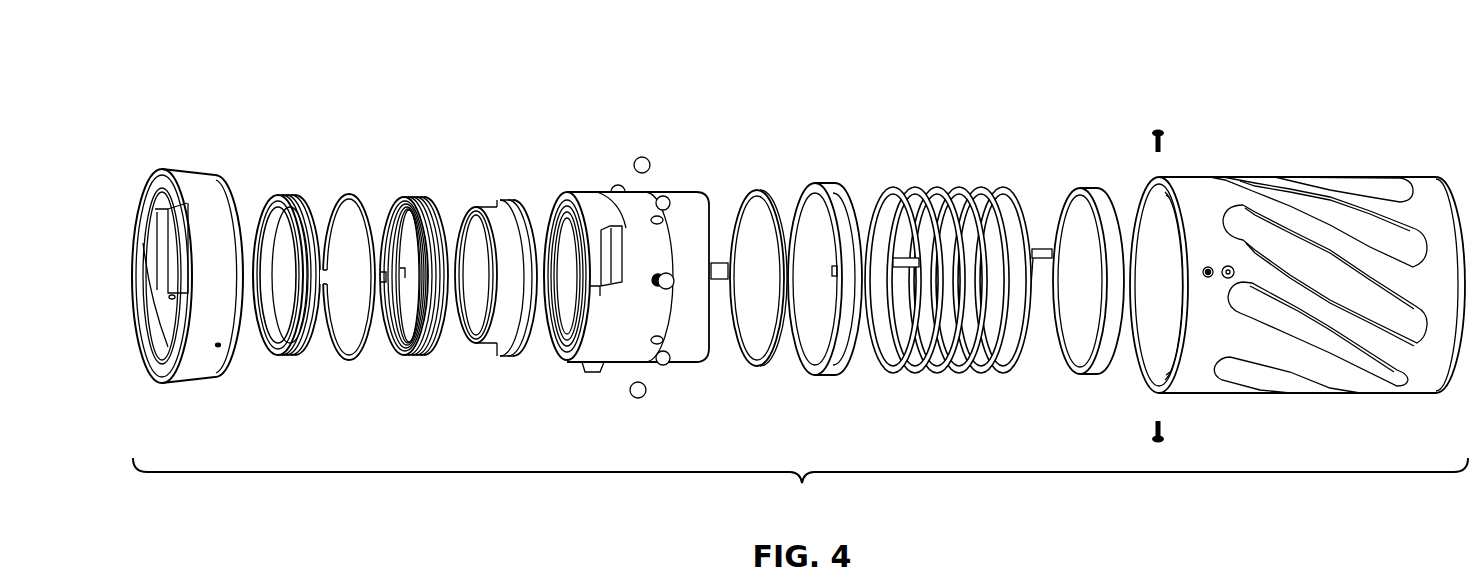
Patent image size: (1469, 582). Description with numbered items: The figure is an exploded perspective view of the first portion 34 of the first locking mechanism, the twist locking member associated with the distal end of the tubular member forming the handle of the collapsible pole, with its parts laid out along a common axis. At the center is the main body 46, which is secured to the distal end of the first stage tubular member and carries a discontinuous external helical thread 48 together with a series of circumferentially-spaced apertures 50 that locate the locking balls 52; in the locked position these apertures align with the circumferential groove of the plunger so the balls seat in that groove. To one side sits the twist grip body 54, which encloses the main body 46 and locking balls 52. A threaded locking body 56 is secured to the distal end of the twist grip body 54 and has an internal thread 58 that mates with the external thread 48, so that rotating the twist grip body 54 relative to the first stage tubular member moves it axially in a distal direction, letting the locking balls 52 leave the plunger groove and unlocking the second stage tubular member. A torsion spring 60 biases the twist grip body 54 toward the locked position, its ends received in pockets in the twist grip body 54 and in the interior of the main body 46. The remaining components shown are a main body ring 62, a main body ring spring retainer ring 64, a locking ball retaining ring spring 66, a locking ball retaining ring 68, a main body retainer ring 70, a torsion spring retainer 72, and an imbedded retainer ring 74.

The first portion 34 is at (800, 488).
The main body 46 is at (690, 193).
The discontinuous external helical thread 48 is at (593, 190).
The circumferentially-spaced apertures 50 is at (673, 220).
The locking balls 52 is at (644, 158).
The twist grip body 54 is at (1323, 187).
The threaded locking body 56 is at (212, 190).
The internal thread 58 is at (150, 260).
The torsion spring 60 is at (963, 192).
The main body ring 62 is at (293, 192).
The main body ring spring retainer ring 64 is at (350, 193).
The locking ball retaining ring spring 66 is at (417, 200).
The locking ball retaining ring 68 is at (512, 202).
The main body retainer ring 70 is at (753, 192).
The torsion spring retainer 72 is at (827, 183).
The imbedded retainer ring 74 is at (1097, 197).